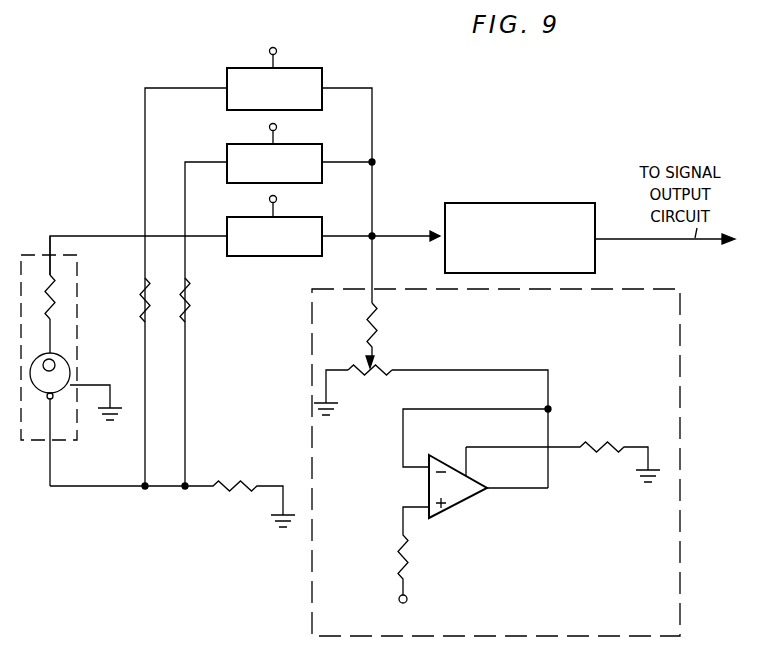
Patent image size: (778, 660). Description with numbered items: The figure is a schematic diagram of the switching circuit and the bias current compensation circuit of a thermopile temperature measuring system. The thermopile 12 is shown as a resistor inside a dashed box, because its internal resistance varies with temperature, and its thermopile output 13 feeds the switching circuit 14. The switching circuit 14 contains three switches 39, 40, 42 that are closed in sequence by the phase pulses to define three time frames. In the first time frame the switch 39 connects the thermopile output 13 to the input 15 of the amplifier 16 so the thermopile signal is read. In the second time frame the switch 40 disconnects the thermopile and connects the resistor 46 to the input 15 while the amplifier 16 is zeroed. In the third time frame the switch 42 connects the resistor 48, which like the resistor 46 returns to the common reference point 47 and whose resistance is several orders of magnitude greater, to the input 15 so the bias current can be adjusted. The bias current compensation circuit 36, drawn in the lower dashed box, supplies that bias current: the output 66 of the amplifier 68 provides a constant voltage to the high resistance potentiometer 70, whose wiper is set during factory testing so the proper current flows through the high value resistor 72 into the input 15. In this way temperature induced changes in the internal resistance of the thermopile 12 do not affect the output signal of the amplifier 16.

The thermopile 12 is at (34, 442).
The thermopile output 13 is at (50, 253).
The switching circuit 14 is at (282, 157).
The input of amplifier 15 is at (440, 232).
The amplifier 16 is at (508, 203).
The bias current compensation circuit 36 is at (461, 463).
The switch 39 is at (278, 247).
The switch 40 is at (227, 152).
The switch 42 is at (227, 70).
The resistor 46 is at (190, 300).
The common reference point 47 is at (181, 490).
The resistor 48 is at (140, 300).
The output of amplifier 66 is at (548, 495).
The amplifier 68 is at (452, 510).
The high resistance potentiometer 70 is at (360, 365).
The resistor 72 is at (379, 320).